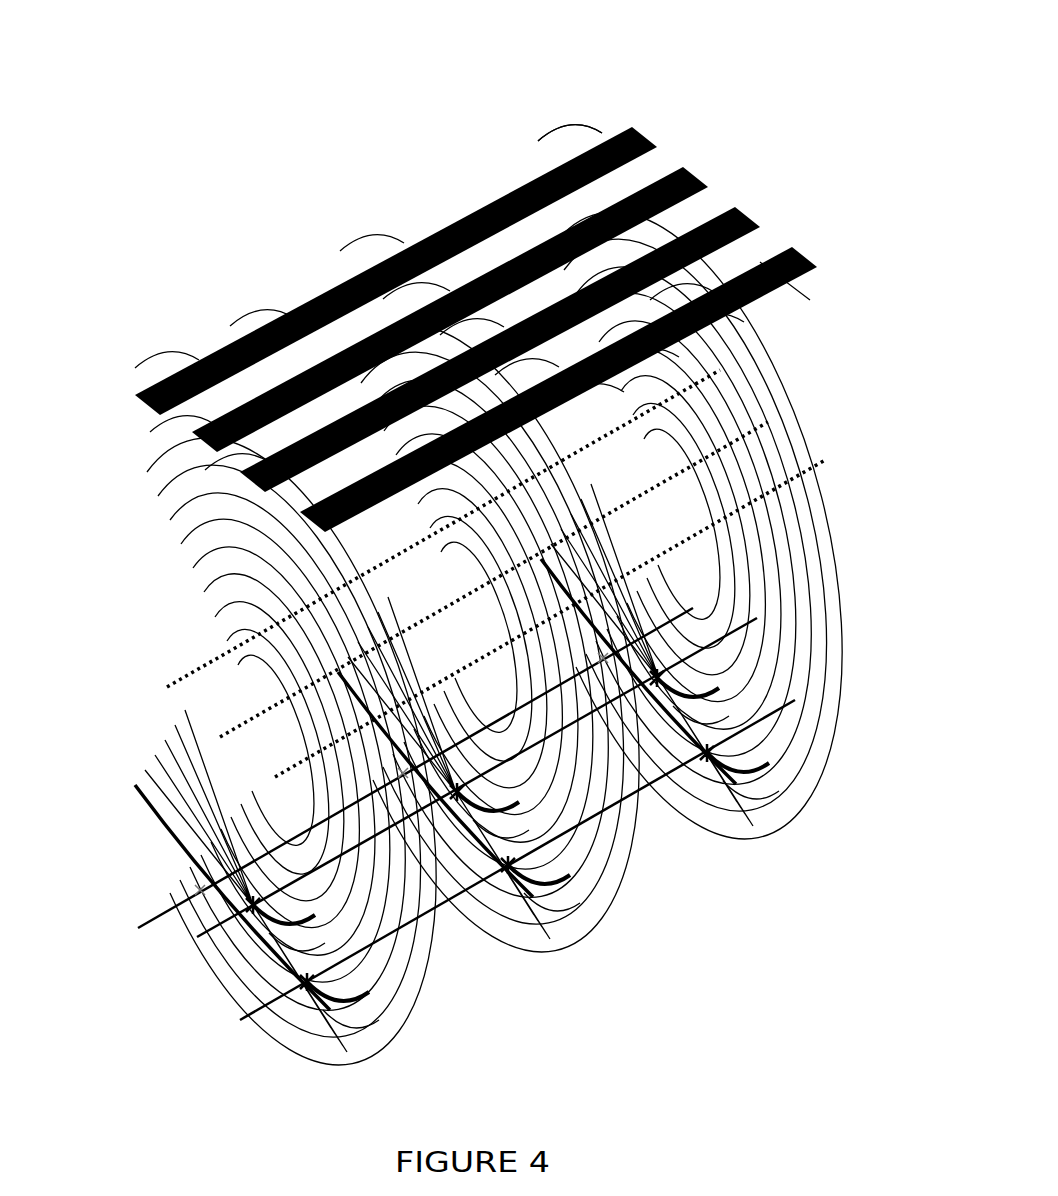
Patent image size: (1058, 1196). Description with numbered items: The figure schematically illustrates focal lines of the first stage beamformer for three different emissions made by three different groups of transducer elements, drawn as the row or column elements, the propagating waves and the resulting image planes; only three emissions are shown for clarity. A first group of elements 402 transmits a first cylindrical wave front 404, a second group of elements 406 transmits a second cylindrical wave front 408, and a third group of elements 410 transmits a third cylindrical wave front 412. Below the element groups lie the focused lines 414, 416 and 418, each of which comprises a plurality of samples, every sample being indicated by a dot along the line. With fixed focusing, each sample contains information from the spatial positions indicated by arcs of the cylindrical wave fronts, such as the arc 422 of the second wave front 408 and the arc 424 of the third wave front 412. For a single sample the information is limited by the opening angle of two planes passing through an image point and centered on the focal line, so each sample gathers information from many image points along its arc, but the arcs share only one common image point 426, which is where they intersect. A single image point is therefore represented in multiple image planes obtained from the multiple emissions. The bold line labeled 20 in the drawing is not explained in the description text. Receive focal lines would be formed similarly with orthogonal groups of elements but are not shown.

The magnetic field line 20 is at (160, 814).
The first group of elements 402 is at (637, 137).
The first cylindrical wave front 404 is at (591, 99).
The second group of elements 406 is at (703, 188).
The second cylindrical wave front 408 is at (668, 157).
The third group of elements 410 is at (742, 218).
The third cylindrical wave front 412 is at (765, 243).
The focused line 414 is at (167, 687).
The focused line 416 is at (220, 737).
The focused line 418 is at (275, 777).
The arc 422 is at (251, 904).
The arc 424 is at (300, 976).
The image point 426 is at (250, 908).